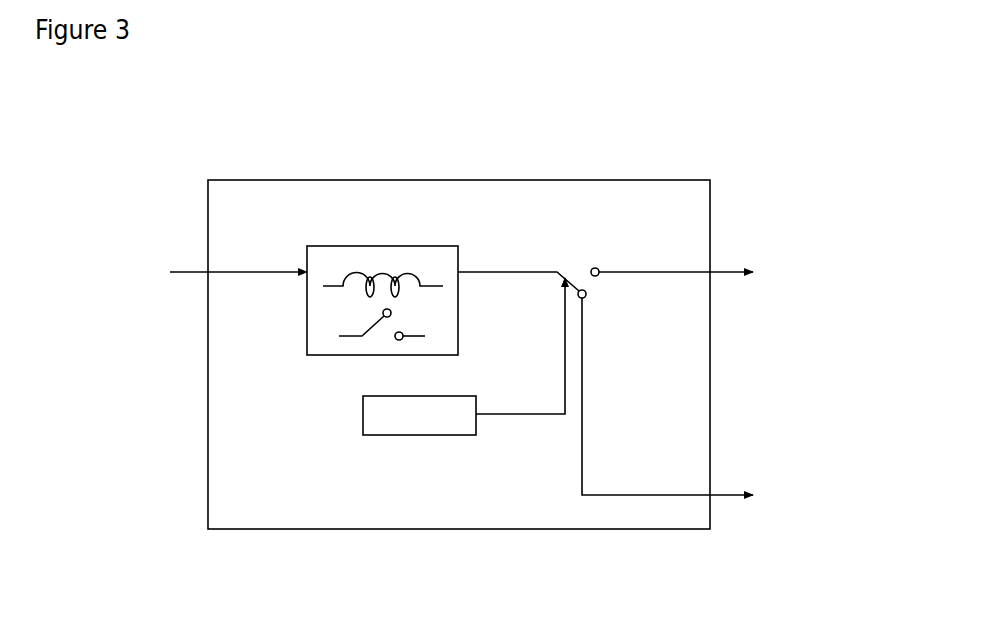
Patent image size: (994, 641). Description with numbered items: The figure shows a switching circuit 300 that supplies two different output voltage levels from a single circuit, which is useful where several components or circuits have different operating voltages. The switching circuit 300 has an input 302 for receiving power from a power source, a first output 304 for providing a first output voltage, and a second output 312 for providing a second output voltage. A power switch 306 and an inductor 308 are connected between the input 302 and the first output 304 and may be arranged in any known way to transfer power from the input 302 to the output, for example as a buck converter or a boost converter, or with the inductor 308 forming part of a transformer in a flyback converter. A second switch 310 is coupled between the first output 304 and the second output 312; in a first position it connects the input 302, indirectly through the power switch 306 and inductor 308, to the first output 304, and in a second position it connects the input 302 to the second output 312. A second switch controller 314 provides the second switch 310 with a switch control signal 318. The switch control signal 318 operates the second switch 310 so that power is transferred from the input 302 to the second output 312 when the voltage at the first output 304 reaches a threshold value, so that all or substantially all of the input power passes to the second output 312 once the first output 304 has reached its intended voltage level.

The switching circuit 300 is at (395, 180).
The input 302 is at (188, 272).
The first output 304 is at (727, 272).
The power switch 306 is at (384, 316).
The inductor 308 is at (408, 268).
The second switch 310 is at (573, 267).
The second output 312 is at (723, 498).
The second switch controller 314 is at (433, 437).
The switch control signal 318 is at (517, 414).